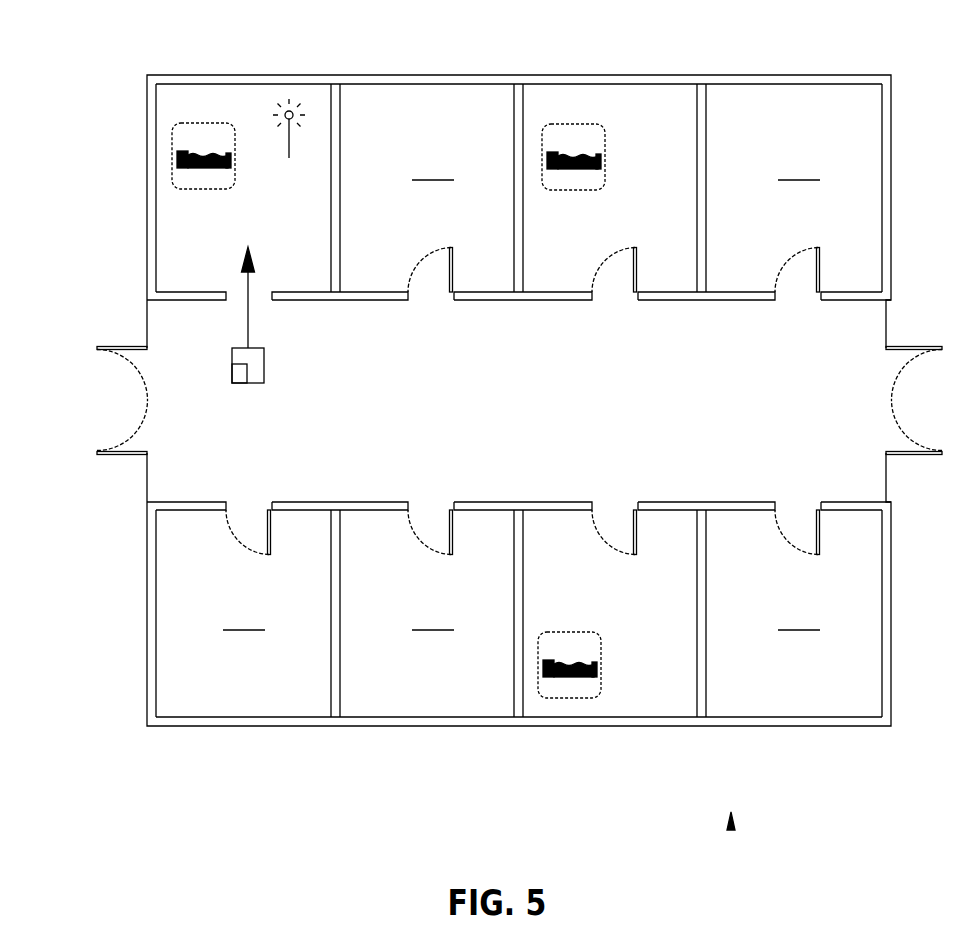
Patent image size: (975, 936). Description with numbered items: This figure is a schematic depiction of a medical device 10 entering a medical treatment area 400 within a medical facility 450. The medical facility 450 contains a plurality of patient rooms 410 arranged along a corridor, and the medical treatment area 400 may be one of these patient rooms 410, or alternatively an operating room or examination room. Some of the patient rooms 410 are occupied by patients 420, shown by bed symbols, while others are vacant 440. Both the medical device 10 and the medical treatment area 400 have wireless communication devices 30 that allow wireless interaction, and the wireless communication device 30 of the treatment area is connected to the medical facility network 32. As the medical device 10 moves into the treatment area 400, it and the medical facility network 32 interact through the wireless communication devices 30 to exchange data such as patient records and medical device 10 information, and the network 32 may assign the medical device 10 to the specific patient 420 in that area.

The medical device 10 is at (264, 362).
The wireless communication device 30 is at (232, 372).
The medical facility network 32 is at (297, 110).
The medical treatment area 400 is at (174, 230).
The patient room 410 is at (223, 76).
The patient 420 is at (172, 152).
The vacant 440 is at (521, 391).
The medical facility 450 is at (731, 830).